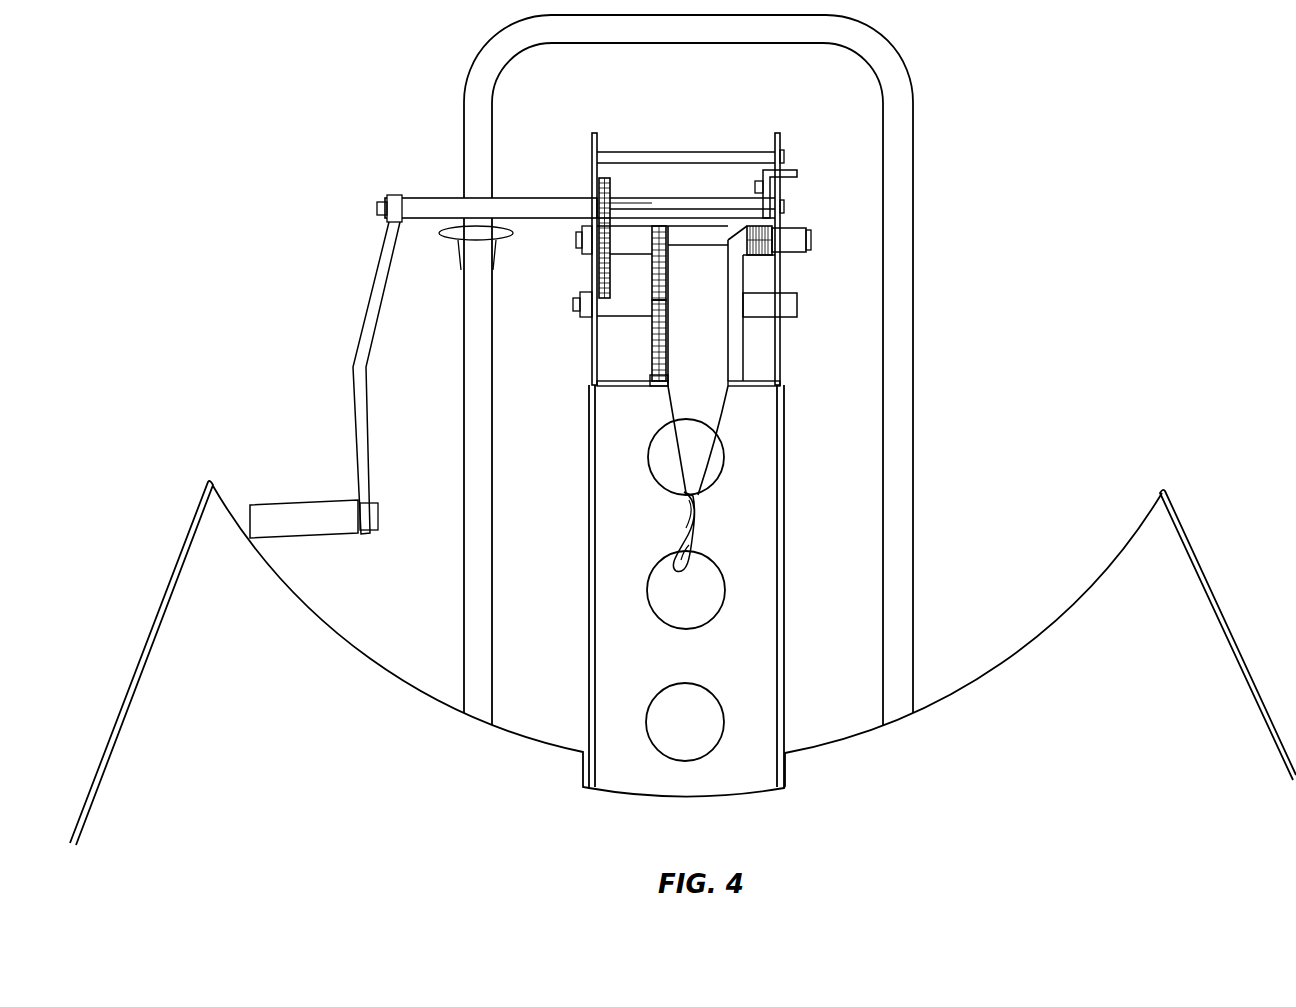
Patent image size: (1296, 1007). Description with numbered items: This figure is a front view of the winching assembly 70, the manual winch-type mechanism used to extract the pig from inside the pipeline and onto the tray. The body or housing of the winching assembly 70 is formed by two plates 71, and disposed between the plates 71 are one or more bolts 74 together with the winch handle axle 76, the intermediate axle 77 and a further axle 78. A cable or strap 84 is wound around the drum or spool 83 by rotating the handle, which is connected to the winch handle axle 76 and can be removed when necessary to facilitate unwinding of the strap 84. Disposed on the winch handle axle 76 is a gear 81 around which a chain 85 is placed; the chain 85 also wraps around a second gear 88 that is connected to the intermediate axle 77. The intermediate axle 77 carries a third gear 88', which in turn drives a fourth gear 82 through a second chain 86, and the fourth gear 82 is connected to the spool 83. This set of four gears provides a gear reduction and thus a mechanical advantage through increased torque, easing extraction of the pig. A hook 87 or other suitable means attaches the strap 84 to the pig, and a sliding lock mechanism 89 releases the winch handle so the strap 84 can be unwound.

The winching assembly 70 is at (737, 128).
The plates 71 is at (595, 134).
The bolts 74 is at (684, 151).
The winch handle axle 76 is at (757, 203).
The intermediate axle 77 is at (760, 245).
The axle 78 is at (760, 307).
The gear 81 is at (600, 190).
The fourth gear 82 is at (650, 345).
The spool 83 is at (740, 343).
The strap 84 is at (710, 415).
The chain 85 is at (600, 265).
The second chain 86 is at (657, 386).
The hook 87 is at (690, 540).
The second gear 88 is at (643, 263).
The third gear 88' is at (645, 187).
The sliding lock mechanism 89 is at (797, 173).